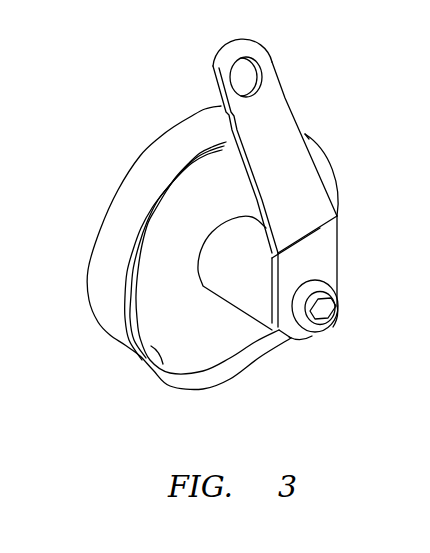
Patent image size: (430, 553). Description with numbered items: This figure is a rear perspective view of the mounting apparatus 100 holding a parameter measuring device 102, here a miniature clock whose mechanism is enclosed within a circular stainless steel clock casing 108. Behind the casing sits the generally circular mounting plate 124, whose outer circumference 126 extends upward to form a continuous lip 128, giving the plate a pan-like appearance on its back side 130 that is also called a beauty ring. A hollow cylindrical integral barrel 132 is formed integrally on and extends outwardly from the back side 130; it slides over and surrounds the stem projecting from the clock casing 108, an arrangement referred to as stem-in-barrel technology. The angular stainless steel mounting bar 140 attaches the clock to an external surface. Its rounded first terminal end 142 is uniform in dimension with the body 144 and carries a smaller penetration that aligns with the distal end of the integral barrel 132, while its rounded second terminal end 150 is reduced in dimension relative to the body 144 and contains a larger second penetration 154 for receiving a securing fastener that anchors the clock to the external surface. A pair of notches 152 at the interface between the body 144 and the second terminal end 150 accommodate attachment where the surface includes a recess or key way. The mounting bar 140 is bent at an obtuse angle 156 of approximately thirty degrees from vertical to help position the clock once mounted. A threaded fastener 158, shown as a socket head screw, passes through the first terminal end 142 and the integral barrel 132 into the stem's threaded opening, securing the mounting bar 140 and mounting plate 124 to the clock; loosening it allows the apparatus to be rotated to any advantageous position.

The mounting apparatus 100 is at (317, 118).
The parameter measuring device 102 is at (136, 156).
The clock casing 108 is at (105, 238).
The mounting plate 124 is at (153, 371).
The outer circumference 126 is at (231, 363).
The continuous lip 128 is at (326, 172).
The back side 130 is at (198, 357).
The integral barrel 132 is at (222, 271).
The mounting bar 140 is at (318, 258).
The first terminal end 142 is at (297, 339).
The body 144 is at (288, 142).
The second terminal end 150 is at (231, 44).
The pair of notches 152 is at (229, 126).
The second penetration 154 is at (238, 77).
The obtuse angle 156 is at (339, 217).
The threaded fastener 158 is at (336, 301).